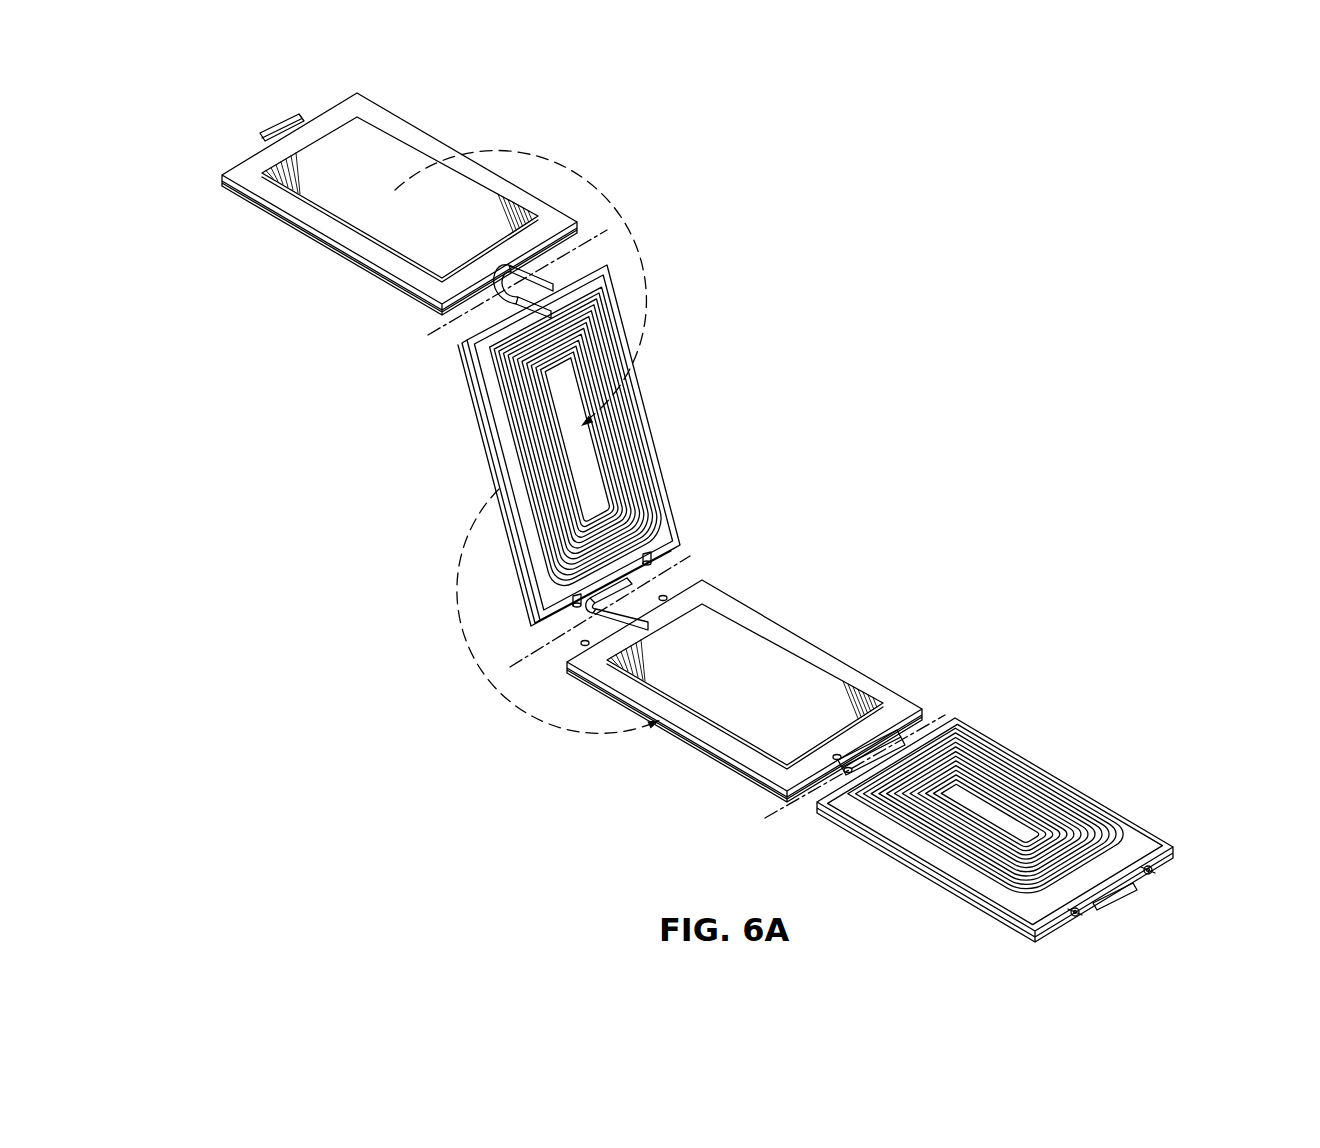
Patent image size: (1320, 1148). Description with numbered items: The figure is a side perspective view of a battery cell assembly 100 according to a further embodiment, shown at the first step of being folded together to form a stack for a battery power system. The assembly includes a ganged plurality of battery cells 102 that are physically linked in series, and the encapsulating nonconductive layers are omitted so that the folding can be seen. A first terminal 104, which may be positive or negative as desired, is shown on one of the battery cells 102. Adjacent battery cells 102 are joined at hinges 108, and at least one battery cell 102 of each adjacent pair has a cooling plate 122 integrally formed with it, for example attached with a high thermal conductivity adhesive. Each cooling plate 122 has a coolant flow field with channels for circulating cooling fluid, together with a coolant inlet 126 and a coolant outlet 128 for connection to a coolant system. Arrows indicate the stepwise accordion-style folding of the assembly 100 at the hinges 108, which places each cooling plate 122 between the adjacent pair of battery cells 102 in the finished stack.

The battery cell assembly 100 is at (752, 272).
The battery cell 102 is at (280, 194).
The first terminal 104 is at (274, 121).
The hinge 108 is at (493, 286).
The cooling plate 122 is at (318, 242).
The coolant inlet 126 is at (1078, 913).
The coolant outlet 128 is at (1153, 872).